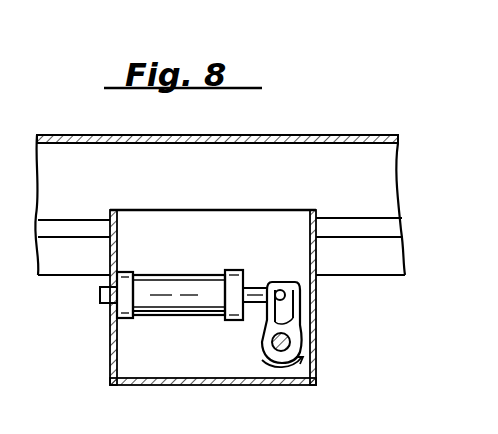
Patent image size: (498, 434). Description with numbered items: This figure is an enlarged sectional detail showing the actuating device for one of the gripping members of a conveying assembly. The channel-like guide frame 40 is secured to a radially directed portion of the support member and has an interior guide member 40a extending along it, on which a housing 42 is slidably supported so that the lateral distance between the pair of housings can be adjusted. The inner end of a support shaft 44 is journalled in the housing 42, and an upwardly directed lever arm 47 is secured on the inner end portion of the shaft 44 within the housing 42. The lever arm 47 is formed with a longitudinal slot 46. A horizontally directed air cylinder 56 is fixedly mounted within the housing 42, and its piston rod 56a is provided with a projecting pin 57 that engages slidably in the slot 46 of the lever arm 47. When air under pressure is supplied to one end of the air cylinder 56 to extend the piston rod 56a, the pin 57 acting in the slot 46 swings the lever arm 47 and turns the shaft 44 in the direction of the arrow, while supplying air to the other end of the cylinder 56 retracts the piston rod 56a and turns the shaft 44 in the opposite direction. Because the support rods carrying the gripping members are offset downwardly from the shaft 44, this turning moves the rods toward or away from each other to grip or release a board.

The guide frame 40 is at (297, 126).
The interior guide member 40a is at (64, 220).
The housing 42 is at (200, 360).
The support shaft 44 is at (297, 347).
The longitudinal slot 46 is at (303, 314).
The lever arm 47 is at (290, 350).
The air cylinder 56 is at (173, 310).
The piston rod 56a is at (262, 292).
The pin 57 is at (283, 285).